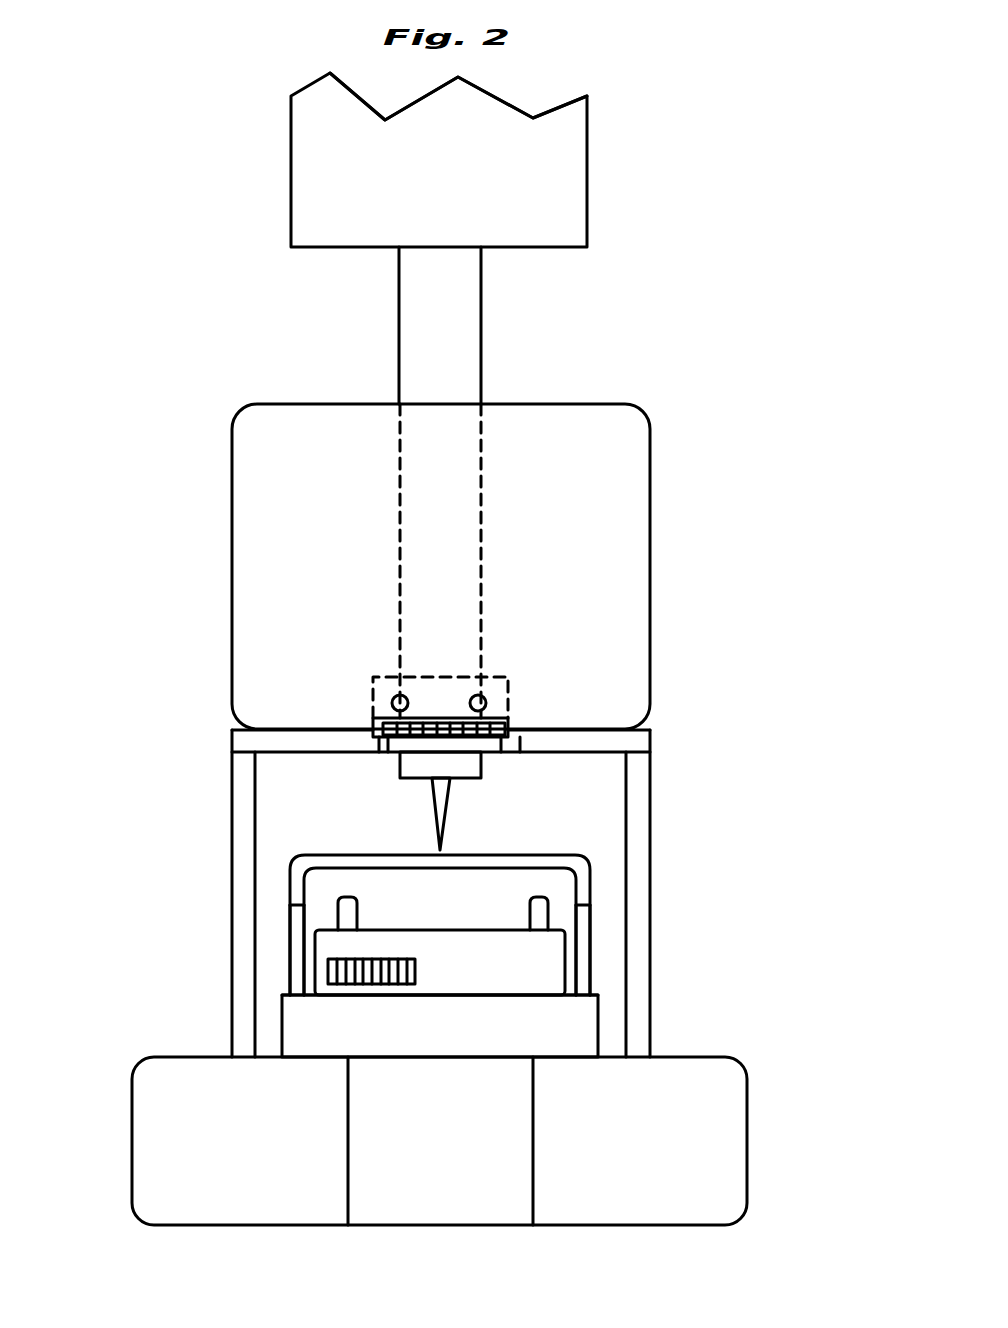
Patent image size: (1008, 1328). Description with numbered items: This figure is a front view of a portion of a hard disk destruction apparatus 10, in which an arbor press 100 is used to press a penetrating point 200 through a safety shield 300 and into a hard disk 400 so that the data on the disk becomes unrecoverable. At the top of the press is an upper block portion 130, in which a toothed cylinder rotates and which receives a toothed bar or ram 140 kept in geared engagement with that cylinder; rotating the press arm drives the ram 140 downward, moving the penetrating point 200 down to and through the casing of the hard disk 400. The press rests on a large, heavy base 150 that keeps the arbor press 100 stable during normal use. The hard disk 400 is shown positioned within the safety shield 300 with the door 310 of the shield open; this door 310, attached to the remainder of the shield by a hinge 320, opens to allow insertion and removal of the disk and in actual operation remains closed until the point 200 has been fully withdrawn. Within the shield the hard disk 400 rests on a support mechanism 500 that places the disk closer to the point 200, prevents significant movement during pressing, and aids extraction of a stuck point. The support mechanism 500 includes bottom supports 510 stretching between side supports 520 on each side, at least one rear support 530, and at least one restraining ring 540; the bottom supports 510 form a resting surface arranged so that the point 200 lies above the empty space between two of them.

The hard disk destruction apparatus 10 is at (697, 168).
The arbor press 100 is at (290, 137).
The upper block portion 130 is at (580, 142).
The toothed bar or ram 140 is at (473, 312).
The base 150 is at (147, 1173).
The penetrating point 200 is at (438, 796).
The safety shield 300 is at (648, 812).
The door 310 is at (650, 573).
The hinge 320 is at (507, 712).
The hard disk 400 is at (548, 946).
The support mechanism 500 is at (587, 1010).
The bottom support 510 is at (280, 1002).
The side support 520 is at (288, 942).
The rear support 530 is at (347, 895).
The restraining ring 540 is at (513, 855).